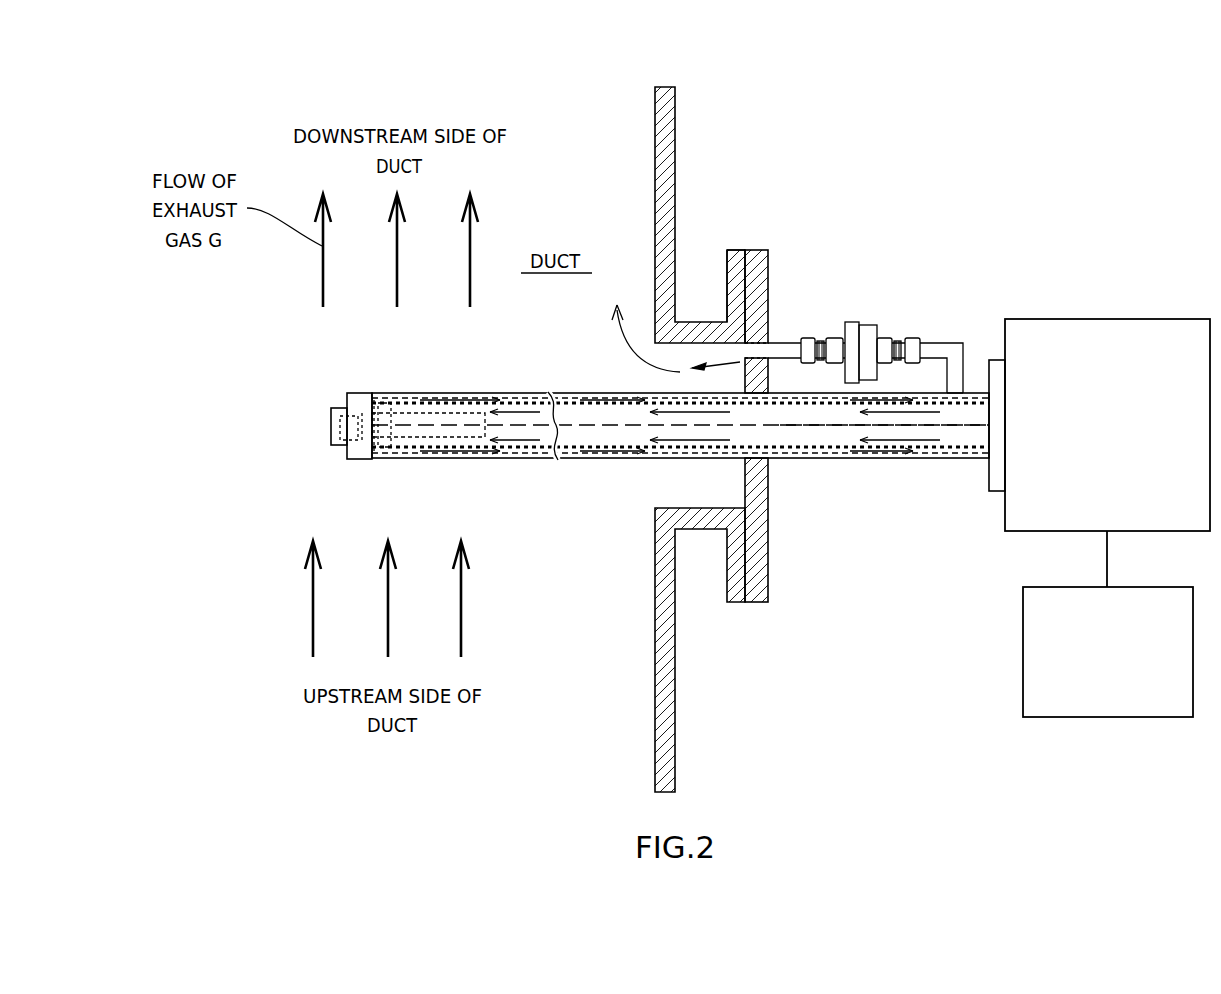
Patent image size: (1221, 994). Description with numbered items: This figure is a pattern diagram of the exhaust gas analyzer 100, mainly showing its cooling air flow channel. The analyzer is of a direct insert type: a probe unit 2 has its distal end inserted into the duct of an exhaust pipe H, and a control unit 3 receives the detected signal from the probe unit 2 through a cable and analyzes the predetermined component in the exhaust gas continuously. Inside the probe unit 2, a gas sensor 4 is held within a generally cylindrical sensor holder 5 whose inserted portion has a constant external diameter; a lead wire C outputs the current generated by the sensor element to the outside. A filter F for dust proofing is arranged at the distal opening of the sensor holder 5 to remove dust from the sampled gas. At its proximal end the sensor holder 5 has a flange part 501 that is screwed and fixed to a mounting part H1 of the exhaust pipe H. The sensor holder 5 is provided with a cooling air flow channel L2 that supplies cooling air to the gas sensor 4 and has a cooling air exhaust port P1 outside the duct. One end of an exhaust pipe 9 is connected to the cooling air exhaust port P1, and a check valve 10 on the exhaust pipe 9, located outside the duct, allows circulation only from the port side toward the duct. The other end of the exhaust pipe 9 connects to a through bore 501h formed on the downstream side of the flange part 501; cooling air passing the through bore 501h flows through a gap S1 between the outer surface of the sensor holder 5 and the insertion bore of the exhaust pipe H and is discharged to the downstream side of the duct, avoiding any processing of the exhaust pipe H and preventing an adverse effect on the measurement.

The exhaust gas analyzer 100 is at (992, 101).
The exhaust pipe H is at (677, 113).
The mounting part H1 is at (733, 249).
The gap S1 is at (700, 358).
The flange part 501 is at (770, 492).
The through bore 501h is at (758, 350).
The probe unit 2 is at (329, 371).
The sensor holder 5 is at (507, 460).
The filter F is at (331, 430).
The gas sensor 4 is at (421, 412).
The cooling air flow channel L2 is at (585, 417).
The lead wire C is at (897, 426).
The cooling air exhaust port P1 is at (964, 392).
The exhaust pipe 9 is at (933, 340).
The check valve 10 is at (868, 323).
The control unit 3 is at (1105, 718).